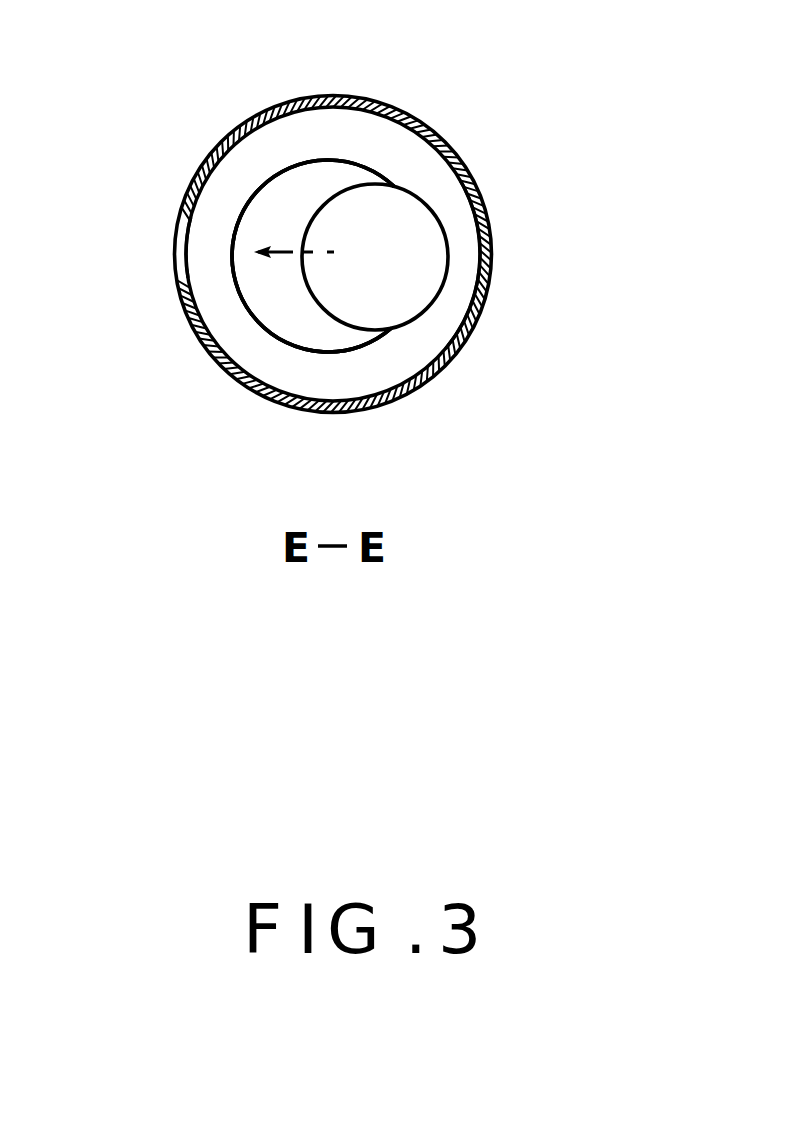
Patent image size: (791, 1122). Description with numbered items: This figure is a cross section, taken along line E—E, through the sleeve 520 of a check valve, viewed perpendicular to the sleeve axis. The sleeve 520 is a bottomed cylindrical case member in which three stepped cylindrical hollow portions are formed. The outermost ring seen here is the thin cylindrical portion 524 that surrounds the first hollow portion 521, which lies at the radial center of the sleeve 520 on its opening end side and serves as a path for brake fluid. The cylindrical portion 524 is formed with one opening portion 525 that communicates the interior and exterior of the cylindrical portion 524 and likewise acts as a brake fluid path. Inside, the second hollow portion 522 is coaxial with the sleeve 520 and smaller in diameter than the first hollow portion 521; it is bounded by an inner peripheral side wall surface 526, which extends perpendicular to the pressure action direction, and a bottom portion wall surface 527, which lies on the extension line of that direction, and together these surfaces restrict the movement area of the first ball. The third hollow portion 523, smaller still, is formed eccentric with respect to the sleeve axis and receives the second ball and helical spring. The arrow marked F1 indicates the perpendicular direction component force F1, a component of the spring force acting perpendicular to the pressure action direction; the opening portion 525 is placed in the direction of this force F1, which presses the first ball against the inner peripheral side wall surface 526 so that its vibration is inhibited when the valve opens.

The sleeve 520 is at (463, 355).
The first hollow portion 521 is at (225, 331).
The second hollow portion 522 is at (278, 197).
The third hollow portion 523 is at (413, 223).
The cylindrical portion 524 is at (488, 283).
The opening portion 525 is at (173, 275).
The inner peripheral side wall surface 526 is at (245, 202).
The bottom portion wall surface 527 is at (315, 187).
The perpendicular direction component force F1 is at (293, 255).